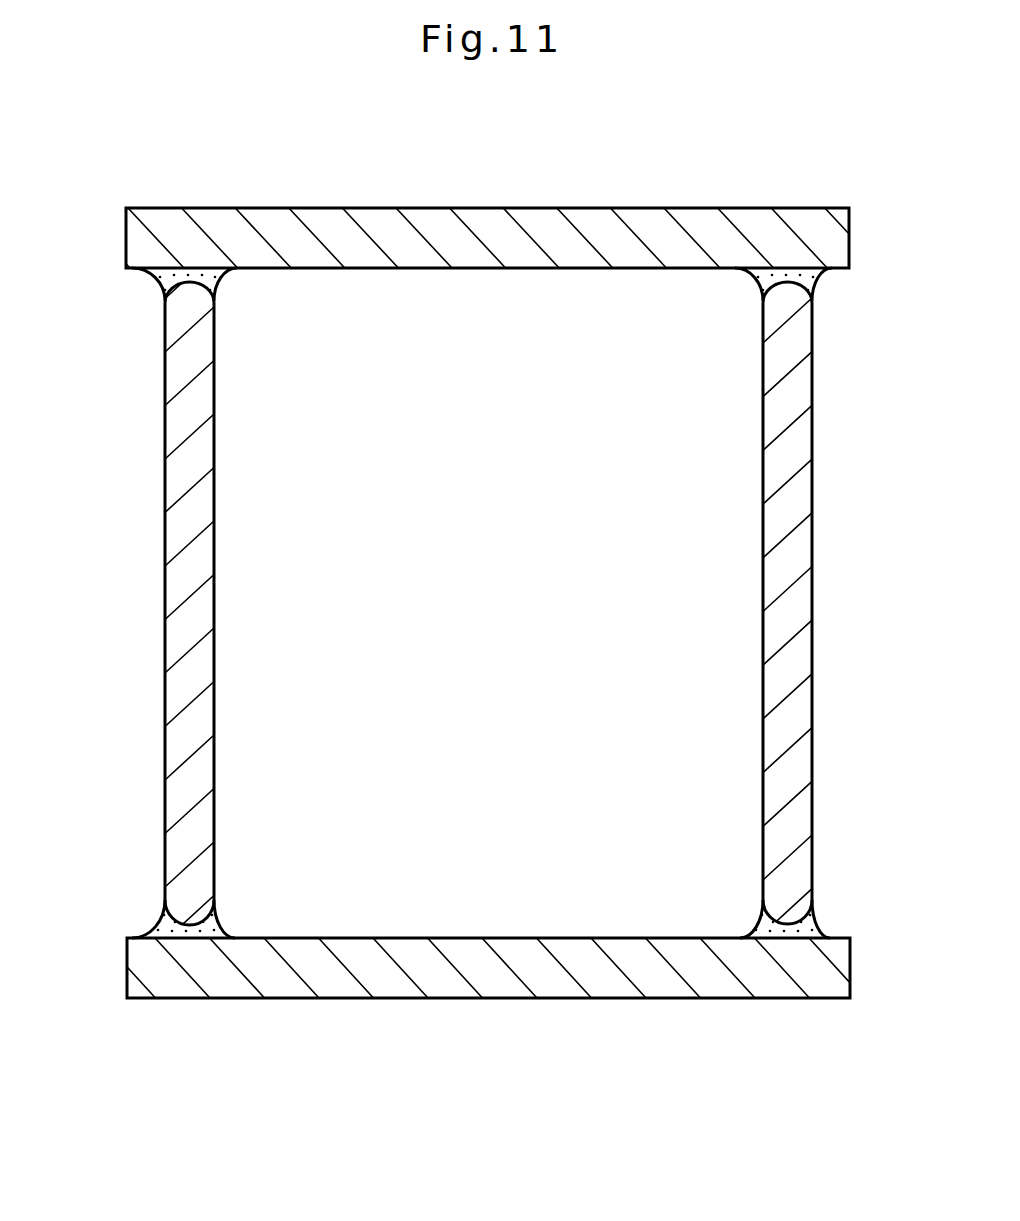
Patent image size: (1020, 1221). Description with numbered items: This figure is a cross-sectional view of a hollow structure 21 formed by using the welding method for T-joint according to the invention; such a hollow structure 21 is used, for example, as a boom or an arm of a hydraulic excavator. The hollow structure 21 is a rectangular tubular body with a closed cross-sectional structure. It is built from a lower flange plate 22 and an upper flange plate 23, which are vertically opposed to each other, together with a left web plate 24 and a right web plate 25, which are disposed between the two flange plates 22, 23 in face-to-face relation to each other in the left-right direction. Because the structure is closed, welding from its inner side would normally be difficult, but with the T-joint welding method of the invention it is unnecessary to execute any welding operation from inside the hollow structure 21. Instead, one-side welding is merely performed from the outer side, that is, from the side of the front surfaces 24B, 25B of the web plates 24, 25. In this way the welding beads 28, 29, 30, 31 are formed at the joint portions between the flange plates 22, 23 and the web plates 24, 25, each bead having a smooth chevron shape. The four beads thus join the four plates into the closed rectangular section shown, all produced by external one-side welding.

The hollow structure 21 is at (626, 208).
The lower flange plate 22 is at (497, 990).
The upper flange plate 23 is at (473, 235).
The left web plate 24 is at (180, 595).
The front surface of left web plate 24B is at (165, 443).
The right web plate 25 is at (800, 595).
The front surface of right web plate 25B is at (812, 440).
The welding bead 28 is at (186, 936).
The welding bead 29 is at (767, 940).
The welding bead 30 is at (173, 275).
The welding bead 31 is at (769, 275).